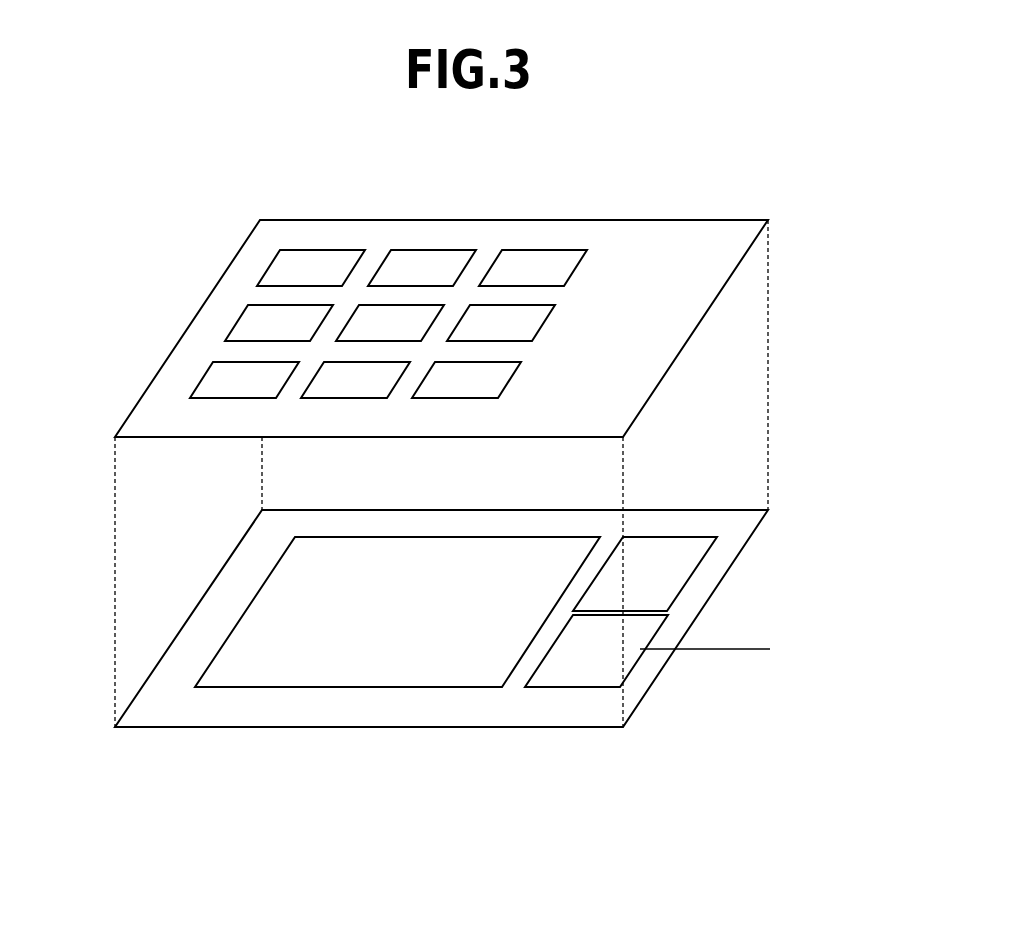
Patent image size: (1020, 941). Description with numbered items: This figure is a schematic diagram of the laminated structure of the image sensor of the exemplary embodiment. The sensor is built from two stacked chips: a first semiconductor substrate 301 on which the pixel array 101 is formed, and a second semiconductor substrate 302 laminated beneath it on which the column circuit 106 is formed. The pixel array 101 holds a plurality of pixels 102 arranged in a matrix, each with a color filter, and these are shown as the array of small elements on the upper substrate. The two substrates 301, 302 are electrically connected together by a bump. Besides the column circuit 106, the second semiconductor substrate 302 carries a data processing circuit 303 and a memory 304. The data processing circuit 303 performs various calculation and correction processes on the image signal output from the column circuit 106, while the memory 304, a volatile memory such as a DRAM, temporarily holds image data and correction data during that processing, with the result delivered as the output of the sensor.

The pixel array 101 is at (197, 310).
The pixels 102 is at (327, 248).
The column circuit 106 is at (253, 597).
The first semiconductor substrate 301 is at (680, 248).
The second semiconductor substrate 302 is at (700, 522).
The data processing circuit 303 is at (578, 667).
The memory 304 is at (658, 573).